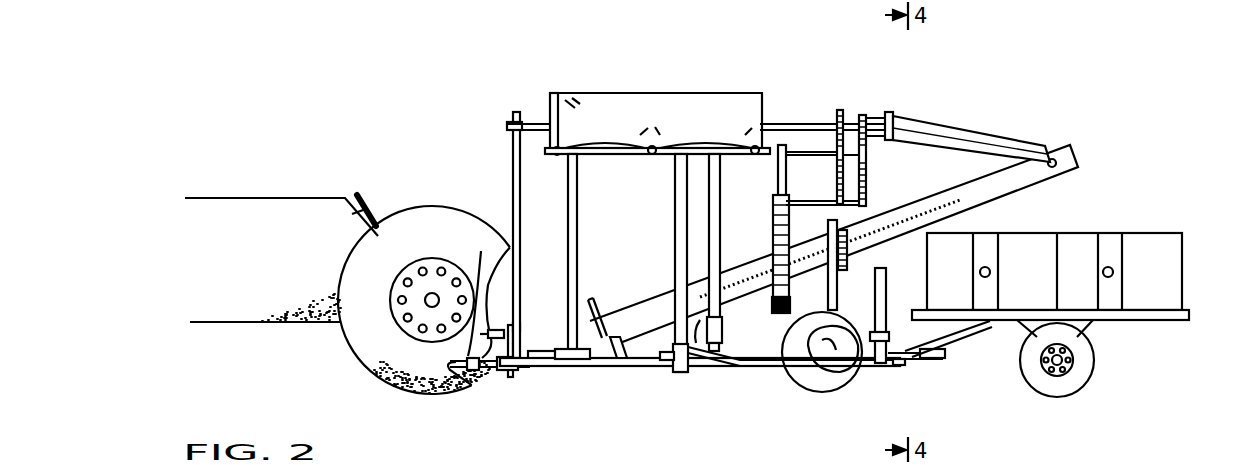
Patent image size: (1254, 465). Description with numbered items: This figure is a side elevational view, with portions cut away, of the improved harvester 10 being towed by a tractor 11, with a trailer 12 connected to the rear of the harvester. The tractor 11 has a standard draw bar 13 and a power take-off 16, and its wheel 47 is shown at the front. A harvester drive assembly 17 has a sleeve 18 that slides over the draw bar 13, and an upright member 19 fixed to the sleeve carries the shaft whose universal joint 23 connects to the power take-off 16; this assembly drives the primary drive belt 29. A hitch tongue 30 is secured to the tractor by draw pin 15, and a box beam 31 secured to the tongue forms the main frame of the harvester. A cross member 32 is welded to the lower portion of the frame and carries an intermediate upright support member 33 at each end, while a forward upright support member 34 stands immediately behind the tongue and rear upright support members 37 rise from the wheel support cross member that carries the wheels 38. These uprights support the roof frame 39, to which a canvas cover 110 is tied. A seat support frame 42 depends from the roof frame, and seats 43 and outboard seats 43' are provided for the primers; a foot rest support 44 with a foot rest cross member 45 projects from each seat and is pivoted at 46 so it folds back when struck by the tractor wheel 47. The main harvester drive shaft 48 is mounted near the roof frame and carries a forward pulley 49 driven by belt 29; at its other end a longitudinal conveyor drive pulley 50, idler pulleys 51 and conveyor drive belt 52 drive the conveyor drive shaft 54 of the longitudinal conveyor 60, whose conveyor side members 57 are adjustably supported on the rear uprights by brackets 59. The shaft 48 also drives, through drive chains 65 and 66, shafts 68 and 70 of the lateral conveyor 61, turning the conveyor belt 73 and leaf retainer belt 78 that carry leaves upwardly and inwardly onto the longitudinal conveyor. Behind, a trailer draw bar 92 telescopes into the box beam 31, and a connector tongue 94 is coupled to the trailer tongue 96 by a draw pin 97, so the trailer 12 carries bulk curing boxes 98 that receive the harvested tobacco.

The harvester 10 is at (1018, 98).
The tractor 11 is at (178, 142).
The trailer 12 is at (1160, 350).
The draw bar 13 is at (478, 368).
The draw pin 15 is at (548, 350).
The power take-off 16 is at (496, 250).
The harvester drive assembly 17 is at (522, 315).
The sleeve 18 is at (512, 376).
The upright member 19 is at (534, 360).
The universal joint 23 is at (494, 340).
The primary drive belt 29 is at (512, 163).
The hitch tongue 30 is at (602, 332).
The box beam 31 is at (600, 368).
The cross member 32 is at (724, 345).
The intermediate upright support member 33 is at (720, 214).
The forward upright support member 34 is at (578, 218).
The rear upright support member 37 is at (860, 298).
The wheel 38 is at (810, 375).
The roof frame 39 is at (515, 72).
The seat support frame 42 is at (676, 245).
The seat 43 is at (695, 388).
The seat 43' is at (794, 391).
The foot rest support 44 is at (672, 374).
The foot rest cross member 45 is at (590, 362).
The pivot 46 is at (620, 365).
The tractor wheel 47 is at (392, 385).
The main harvester drive shaft 48 is at (508, 118).
The forward pulley 49 is at (505, 130).
The longitudinal conveyor drive pulley 50 is at (867, 118).
The idler pulley 51 is at (898, 140).
The conveyor drive belt 52 is at (1035, 132).
The conveyor drive shaft 54 is at (1056, 167).
The conveyor side member 57 is at (960, 208).
The bracket 59 is at (850, 258).
The longitudinal conveyor 60 is at (1110, 148).
The lateral conveyor 61 is at (792, 180).
The drive chain 65 is at (866, 160).
The drive chain 66 is at (867, 188).
The shaft 68 is at (792, 148).
The shaft 70 is at (797, 205).
The conveyor belt 73 is at (774, 236).
The leaf retainer belt 78 is at (777, 178).
The trailer draw bar 92 is at (890, 350).
The connector tongue 94 is at (895, 365).
The trailer tongue 96 is at (925, 356).
The draw pin 97 is at (945, 354).
The bulk curing box 98 is at (1040, 245).
The cover 110 is at (600, 92).